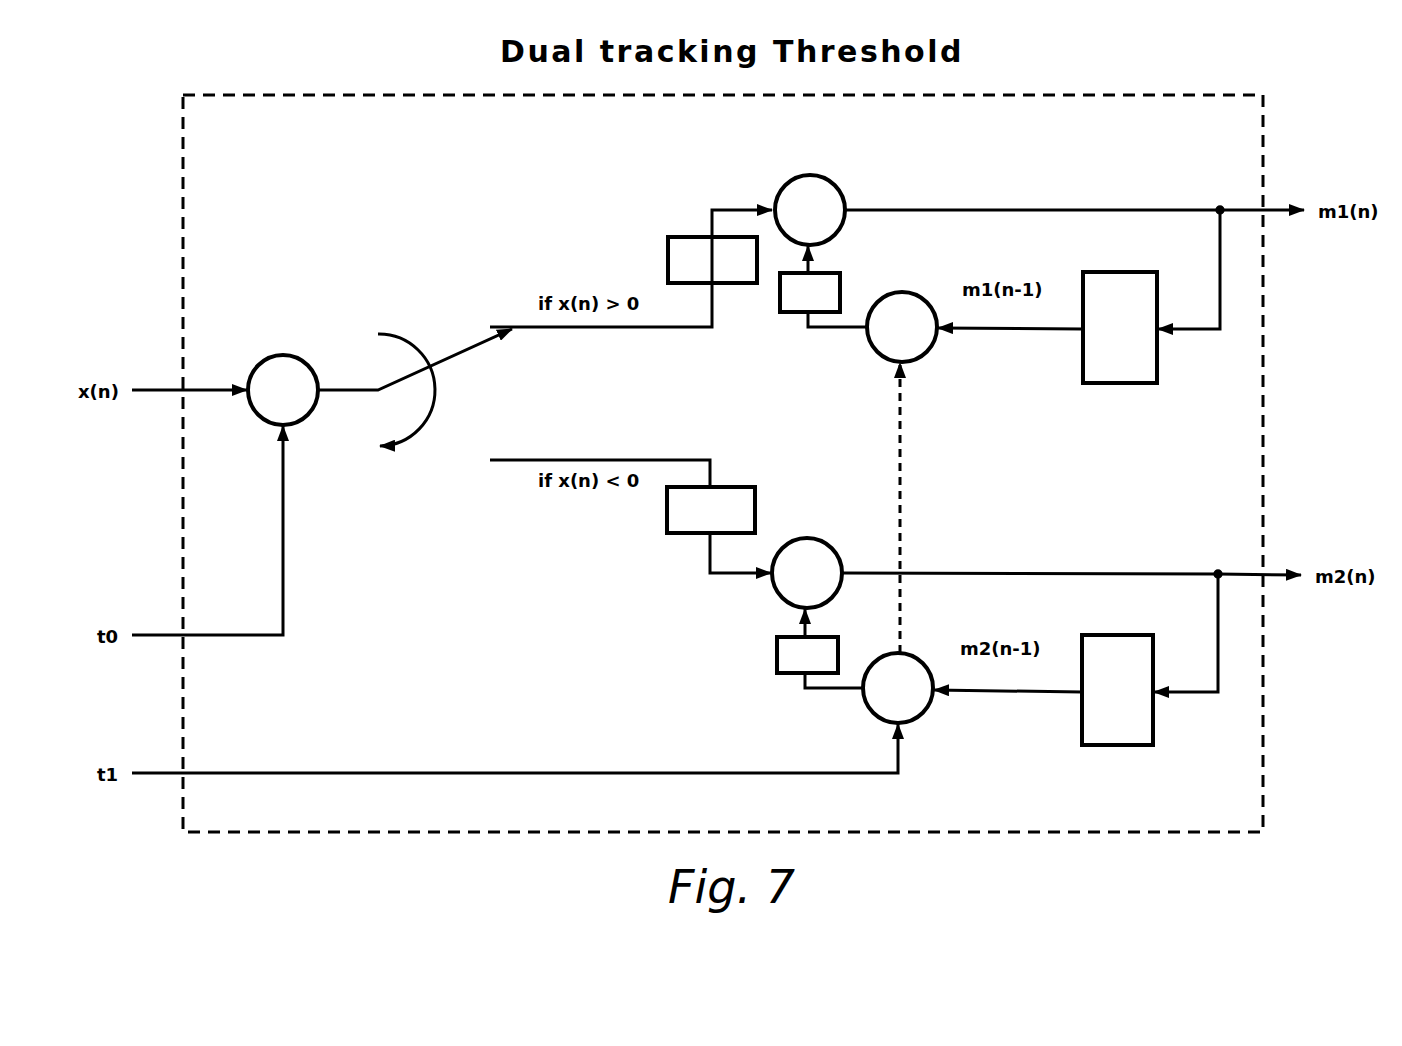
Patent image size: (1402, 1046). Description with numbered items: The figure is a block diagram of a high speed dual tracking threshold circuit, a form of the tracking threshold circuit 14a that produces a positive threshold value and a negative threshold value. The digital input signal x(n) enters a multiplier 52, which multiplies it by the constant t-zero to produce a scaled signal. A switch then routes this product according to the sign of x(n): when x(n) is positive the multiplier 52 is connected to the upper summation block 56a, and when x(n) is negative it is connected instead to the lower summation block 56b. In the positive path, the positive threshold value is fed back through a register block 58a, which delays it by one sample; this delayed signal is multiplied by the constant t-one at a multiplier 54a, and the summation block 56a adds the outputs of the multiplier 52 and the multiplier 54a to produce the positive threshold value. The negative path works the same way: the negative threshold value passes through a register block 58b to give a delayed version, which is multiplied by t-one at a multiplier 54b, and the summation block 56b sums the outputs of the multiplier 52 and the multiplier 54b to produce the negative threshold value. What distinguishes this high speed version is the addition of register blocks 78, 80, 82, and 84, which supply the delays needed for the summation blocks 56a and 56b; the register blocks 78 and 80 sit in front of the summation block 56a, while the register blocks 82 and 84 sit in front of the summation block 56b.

The tracking threshold circuit 14a is at (1263, 762).
The multiplier 52 is at (298, 357).
The register block 78 is at (668, 254).
The summation block 56a is at (822, 177).
The register block 80 is at (832, 273).
The multiplier 54a is at (918, 358).
The register block 58a is at (1157, 362).
The register block 82 is at (742, 487).
The summation block 56b is at (820, 540).
The register block 84 is at (777, 663).
The multiplier 54b is at (914, 719).
The register block 58b is at (1153, 724).